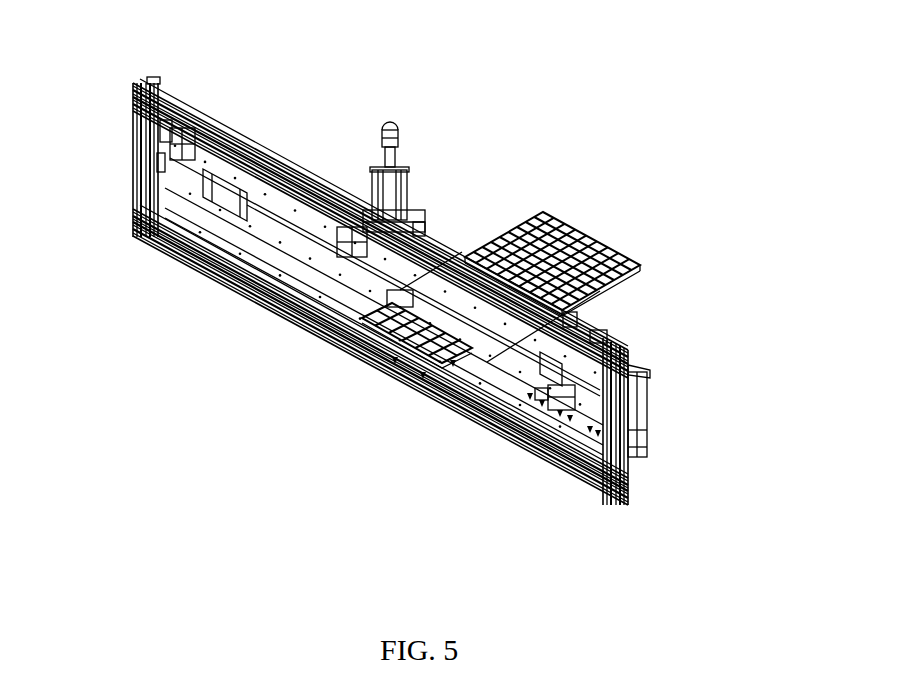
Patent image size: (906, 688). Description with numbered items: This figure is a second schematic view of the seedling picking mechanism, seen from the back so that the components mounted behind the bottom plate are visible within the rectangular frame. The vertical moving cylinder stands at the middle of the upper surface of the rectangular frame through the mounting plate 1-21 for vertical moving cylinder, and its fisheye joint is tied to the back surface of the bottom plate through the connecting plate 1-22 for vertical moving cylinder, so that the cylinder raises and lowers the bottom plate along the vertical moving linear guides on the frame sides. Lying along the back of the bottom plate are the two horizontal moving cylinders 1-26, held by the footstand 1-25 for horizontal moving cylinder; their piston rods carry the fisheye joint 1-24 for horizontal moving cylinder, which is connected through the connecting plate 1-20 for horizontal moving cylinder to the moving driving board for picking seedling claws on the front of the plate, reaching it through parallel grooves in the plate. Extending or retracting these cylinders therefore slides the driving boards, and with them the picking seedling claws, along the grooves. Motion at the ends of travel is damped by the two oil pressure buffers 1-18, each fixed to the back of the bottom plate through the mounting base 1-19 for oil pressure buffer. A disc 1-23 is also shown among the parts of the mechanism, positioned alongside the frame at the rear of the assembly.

The oil pressure buffer 1-18 is at (133, 100).
The mounting base for oil pressure buffer 1-19 is at (188, 145).
The connecting plate for horizontal moving cylinder 1-20 is at (338, 208).
The mounting plate for vertical moving cylinder 1-21 is at (400, 223).
The connecting plate for vertical moving cylinder 1-22 is at (415, 228).
The disc 1-23 is at (610, 295).
The fisheye joint for horizontal moving cylinder 1-24 is at (548, 393).
The footstand for horizontal moving cylinder 1-25 is at (365, 258).
The horizontal moving cylinder 1-26 is at (230, 203).